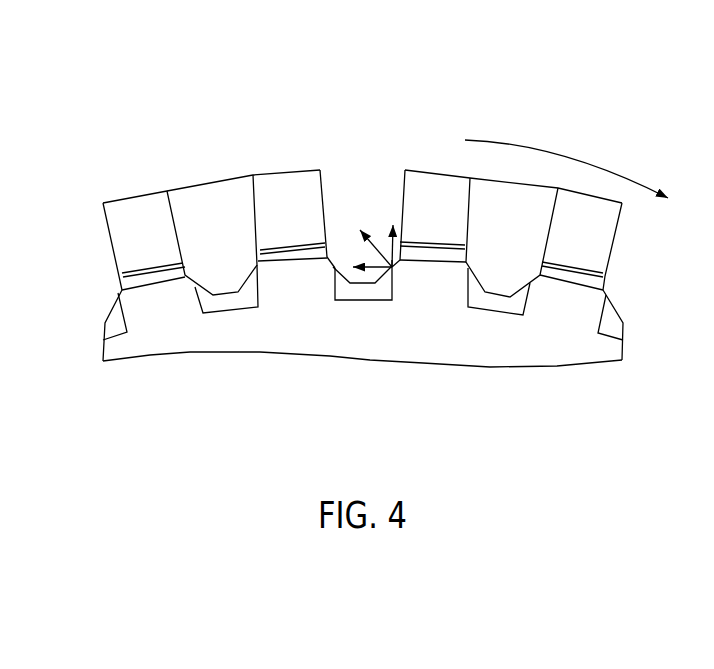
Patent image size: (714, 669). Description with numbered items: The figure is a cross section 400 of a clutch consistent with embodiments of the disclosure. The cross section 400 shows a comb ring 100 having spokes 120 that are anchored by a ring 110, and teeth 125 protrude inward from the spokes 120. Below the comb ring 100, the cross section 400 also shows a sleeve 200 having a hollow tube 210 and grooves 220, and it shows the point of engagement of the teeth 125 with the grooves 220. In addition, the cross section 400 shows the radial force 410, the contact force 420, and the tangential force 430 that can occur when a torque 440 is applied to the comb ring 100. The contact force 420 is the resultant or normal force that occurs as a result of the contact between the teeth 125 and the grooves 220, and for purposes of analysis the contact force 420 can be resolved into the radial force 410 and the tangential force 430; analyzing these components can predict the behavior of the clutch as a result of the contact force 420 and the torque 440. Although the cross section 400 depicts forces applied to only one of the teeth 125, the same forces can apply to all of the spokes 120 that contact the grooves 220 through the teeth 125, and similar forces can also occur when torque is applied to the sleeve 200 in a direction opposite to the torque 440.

The cross section 400 is at (138, 88).
The comb ring 100 is at (92, 198).
The ring 110 is at (290, 198).
The spokes 120 is at (333, 183).
The teeth 125 is at (337, 263).
The sleeve 200 is at (122, 368).
The hollow tube 210 is at (355, 351).
The grooves 220 is at (378, 293).
The radial force 410 is at (395, 260).
The contact force 420 is at (362, 227).
The tangential force 430 is at (378, 270).
The torque 440 is at (557, 152).